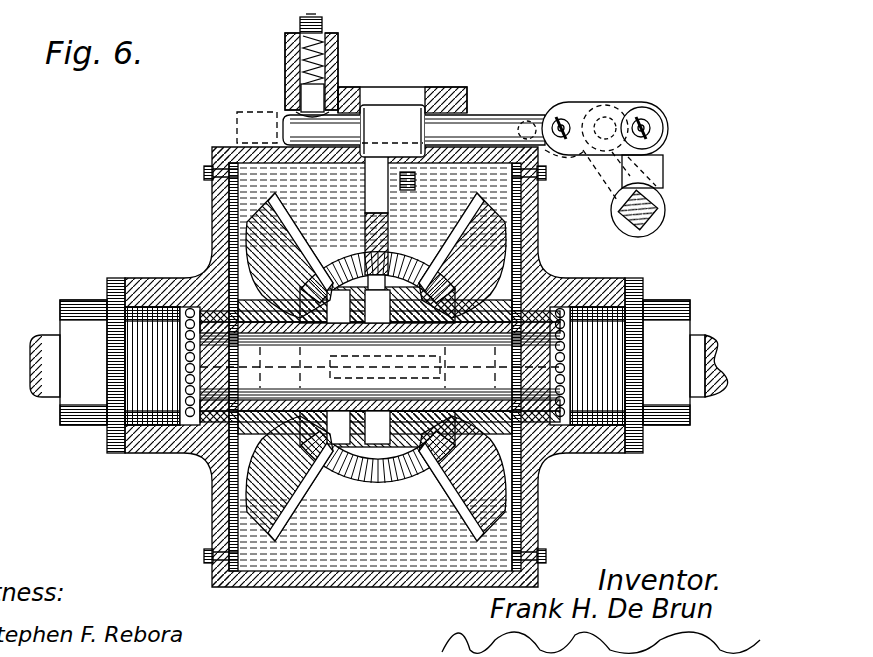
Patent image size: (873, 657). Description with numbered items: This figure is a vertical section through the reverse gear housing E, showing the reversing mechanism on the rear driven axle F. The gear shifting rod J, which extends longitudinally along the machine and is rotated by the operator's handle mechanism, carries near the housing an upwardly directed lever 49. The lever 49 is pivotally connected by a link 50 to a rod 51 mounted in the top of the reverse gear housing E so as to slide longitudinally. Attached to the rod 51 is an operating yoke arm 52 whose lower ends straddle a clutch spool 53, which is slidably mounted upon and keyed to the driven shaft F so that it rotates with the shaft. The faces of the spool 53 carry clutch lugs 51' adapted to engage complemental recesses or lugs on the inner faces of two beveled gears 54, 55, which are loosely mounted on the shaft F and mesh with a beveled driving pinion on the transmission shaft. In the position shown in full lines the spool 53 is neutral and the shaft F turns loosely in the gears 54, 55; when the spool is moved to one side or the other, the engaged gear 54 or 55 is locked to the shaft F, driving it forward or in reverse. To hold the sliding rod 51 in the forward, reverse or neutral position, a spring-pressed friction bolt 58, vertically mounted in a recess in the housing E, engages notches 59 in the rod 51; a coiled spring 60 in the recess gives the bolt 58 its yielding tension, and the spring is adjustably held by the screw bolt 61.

The upwardly directed lever 49 is at (656, 162).
The link 50 is at (600, 112).
The rod 51 is at (414, 110).
The clutch lugs 51' is at (375, 533).
The operating yoke arm 52 is at (392, 274).
The clutch spool 53 is at (396, 485).
The beveled gear 54 is at (477, 522).
The beveled gear 55 is at (267, 520).
The spring-pressed friction bolt 58 is at (340, 100).
The notches or recesses 59 is at (267, 118).
The coiled spring 60 is at (285, 64).
The screw bolt 61 is at (300, 22).
The reverse gear housing E is at (228, 150).
The rear driven axle F is at (390, 365).
The gear shifting rod J is at (666, 206).